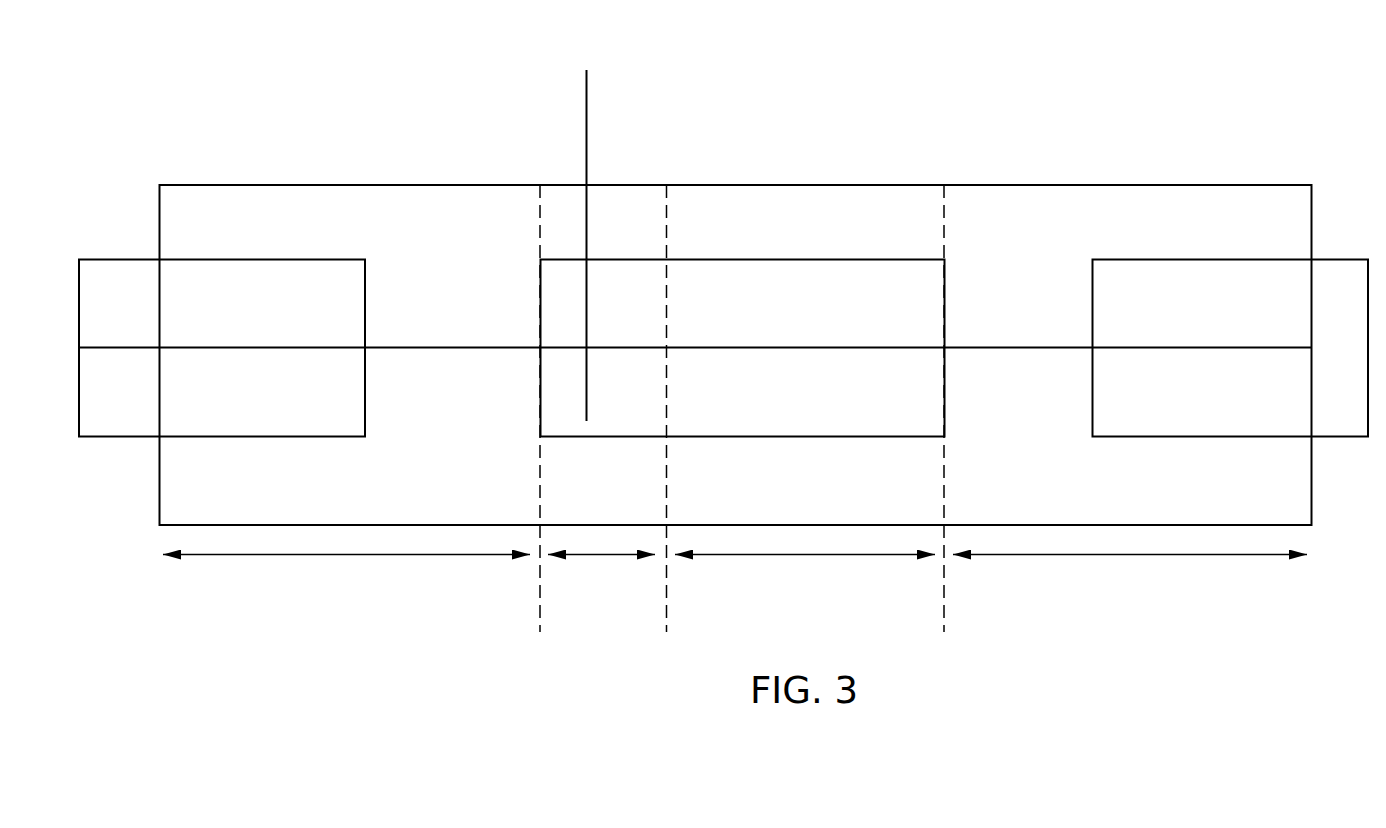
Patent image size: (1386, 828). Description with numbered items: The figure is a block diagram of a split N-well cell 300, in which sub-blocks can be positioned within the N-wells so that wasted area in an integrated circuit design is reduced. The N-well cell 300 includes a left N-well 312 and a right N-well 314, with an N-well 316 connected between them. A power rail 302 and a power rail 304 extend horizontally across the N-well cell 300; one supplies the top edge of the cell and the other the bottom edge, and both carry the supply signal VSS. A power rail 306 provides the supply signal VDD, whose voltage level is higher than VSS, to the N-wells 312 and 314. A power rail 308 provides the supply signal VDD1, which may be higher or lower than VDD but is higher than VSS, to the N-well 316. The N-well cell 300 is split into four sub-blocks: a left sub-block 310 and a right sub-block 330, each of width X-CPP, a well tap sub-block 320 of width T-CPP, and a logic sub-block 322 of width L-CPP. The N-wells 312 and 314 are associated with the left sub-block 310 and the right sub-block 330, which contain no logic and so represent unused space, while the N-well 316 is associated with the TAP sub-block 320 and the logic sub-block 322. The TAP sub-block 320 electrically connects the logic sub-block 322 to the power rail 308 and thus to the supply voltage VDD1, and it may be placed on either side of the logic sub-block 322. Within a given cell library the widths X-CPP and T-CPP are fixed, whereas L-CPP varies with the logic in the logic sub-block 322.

The N-well cell 300 is at (232, 82).
The power rail 302 is at (157, 525).
The power rail 304 is at (308, 185).
The power rail 306 is at (433, 347).
The power rail 308 is at (587, 128).
The left sub-block 310 is at (350, 557).
The left N-well 312 is at (141, 298).
The right N-well 314 is at (1159, 300).
The N-well 316 is at (881, 307).
The well tap sub-block 320 is at (605, 557).
The logic sub-block 322 is at (808, 557).
The right sub-block 330 is at (1132, 557).